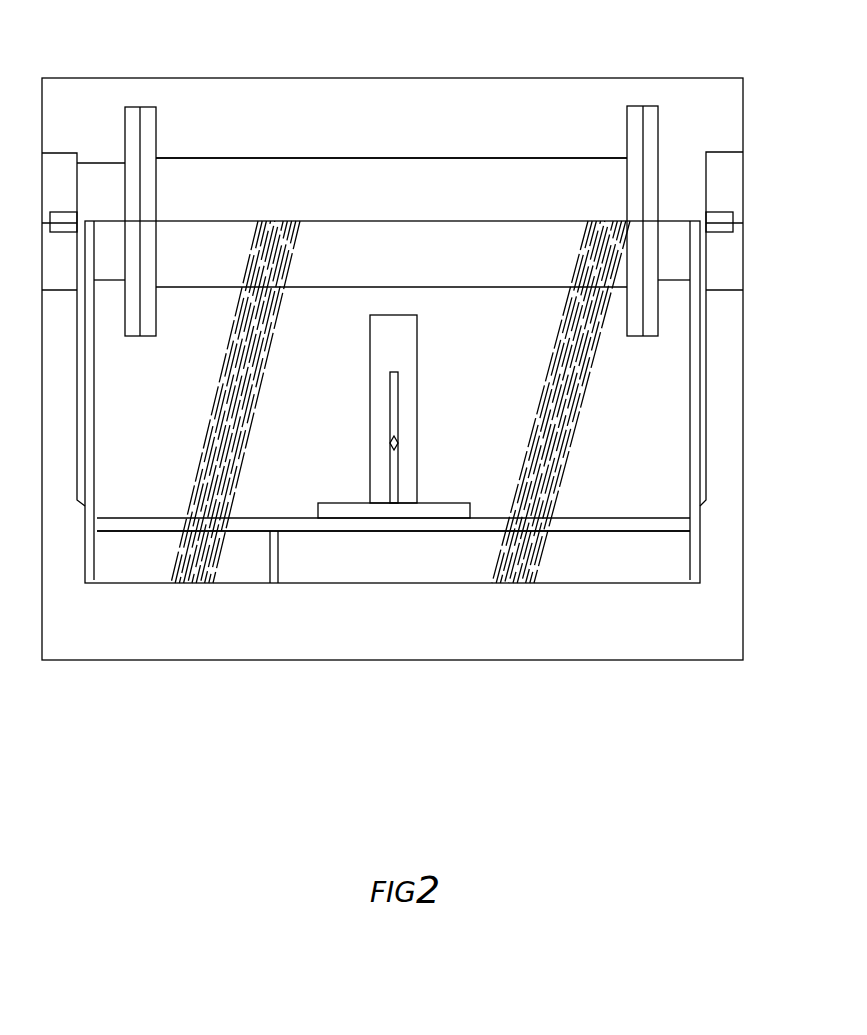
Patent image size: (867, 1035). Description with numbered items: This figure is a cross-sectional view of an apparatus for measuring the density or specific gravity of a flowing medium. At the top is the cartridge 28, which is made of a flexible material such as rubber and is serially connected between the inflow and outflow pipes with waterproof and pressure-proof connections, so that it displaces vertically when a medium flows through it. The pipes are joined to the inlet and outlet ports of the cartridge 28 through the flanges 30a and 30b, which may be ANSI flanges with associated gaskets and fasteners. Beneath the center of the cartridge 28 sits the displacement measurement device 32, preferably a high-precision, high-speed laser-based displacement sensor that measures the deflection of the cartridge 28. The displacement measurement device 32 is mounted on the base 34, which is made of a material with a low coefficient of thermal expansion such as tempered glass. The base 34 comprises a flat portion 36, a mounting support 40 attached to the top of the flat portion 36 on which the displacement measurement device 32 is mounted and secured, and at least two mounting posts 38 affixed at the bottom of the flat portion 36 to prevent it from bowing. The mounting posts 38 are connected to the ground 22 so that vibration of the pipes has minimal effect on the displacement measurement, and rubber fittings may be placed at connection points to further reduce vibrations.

The ground 22 is at (440, 588).
The cartridge 28 is at (424, 153).
The flange 30a is at (141, 104).
The flange 30b is at (638, 104).
The displacement measurement device 32 is at (368, 480).
The base 34 is at (155, 532).
The flat portion 36 is at (657, 527).
The mounting post 38 is at (266, 566).
The mounting support 40 is at (402, 513).